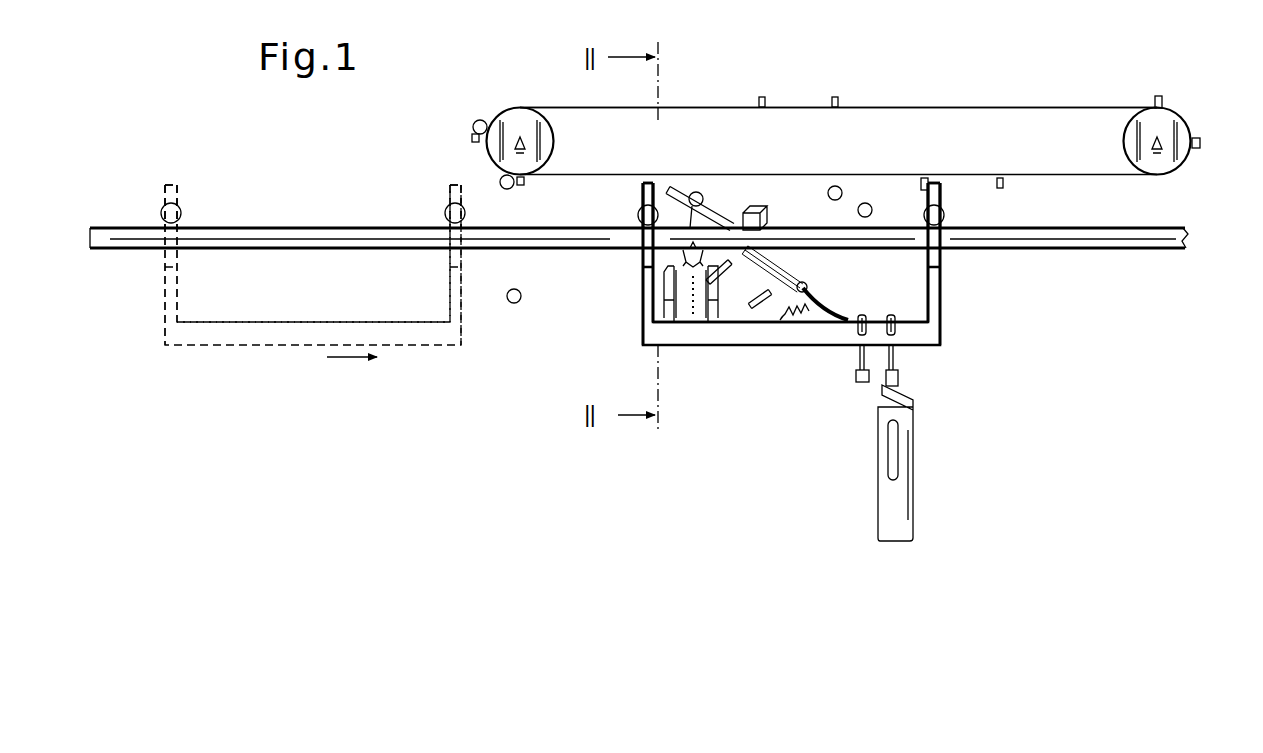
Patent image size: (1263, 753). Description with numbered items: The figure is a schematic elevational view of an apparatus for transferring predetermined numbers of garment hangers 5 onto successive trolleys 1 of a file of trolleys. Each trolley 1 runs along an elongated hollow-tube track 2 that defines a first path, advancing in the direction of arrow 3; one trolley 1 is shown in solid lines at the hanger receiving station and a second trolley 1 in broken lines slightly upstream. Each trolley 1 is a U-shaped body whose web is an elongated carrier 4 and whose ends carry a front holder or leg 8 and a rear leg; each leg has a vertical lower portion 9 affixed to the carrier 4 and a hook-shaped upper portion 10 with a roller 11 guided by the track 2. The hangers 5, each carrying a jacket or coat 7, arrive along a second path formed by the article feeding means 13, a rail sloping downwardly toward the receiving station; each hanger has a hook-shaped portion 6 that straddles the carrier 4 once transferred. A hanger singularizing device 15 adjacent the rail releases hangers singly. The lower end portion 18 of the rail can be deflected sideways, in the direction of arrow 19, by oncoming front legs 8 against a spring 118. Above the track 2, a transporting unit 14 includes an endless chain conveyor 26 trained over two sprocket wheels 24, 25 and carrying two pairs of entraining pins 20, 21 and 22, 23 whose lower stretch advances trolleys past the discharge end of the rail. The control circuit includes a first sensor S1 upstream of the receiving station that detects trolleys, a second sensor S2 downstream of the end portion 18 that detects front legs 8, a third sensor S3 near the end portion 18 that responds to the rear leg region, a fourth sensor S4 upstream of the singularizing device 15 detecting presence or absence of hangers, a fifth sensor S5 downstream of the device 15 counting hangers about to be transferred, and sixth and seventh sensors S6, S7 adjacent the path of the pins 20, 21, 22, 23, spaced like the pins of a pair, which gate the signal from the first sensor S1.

The trolley 1 is at (196, 352).
The track 2 is at (296, 226).
The arrow 3 is at (352, 358).
The carrier 4 is at (315, 322).
The garment hanger 5 is at (680, 253).
The hook-shaped portion 6 is at (700, 186).
The jacket or coat 7 is at (665, 294).
The front holder or leg 8 is at (162, 289).
The vertical lower portion 9 is at (178, 287).
The hook-shaped upper portion 10 is at (178, 185).
The roller 11 is at (183, 215).
The article feeding means 13 is at (795, 262).
The transporting unit 14 is at (896, 101).
The hanger singularizing device 15 is at (755, 205).
The lower end portion 18 is at (813, 291).
The arrow 19 is at (838, 304).
The entraining pin 20 is at (522, 179).
The entraining pin 21 is at (472, 137).
The entraining pin 22 is at (760, 96).
The entraining pin 23 is at (834, 96).
The sprocket wheel 24 is at (555, 140).
The sprocket wheel 25 is at (1127, 140).
The endless belt or chain conveyor 26 is at (987, 107).
The spring 118 is at (807, 311).
The first sensor S1 is at (514, 303).
The second sensor S2 is at (872, 208).
The third sensor S3 is at (832, 186).
The fourth sensor S4 is at (725, 275).
The fifth sensor S5 is at (765, 298).
The sixth sensor S6 is at (477, 121).
The seventh sensor S7 is at (500, 185).